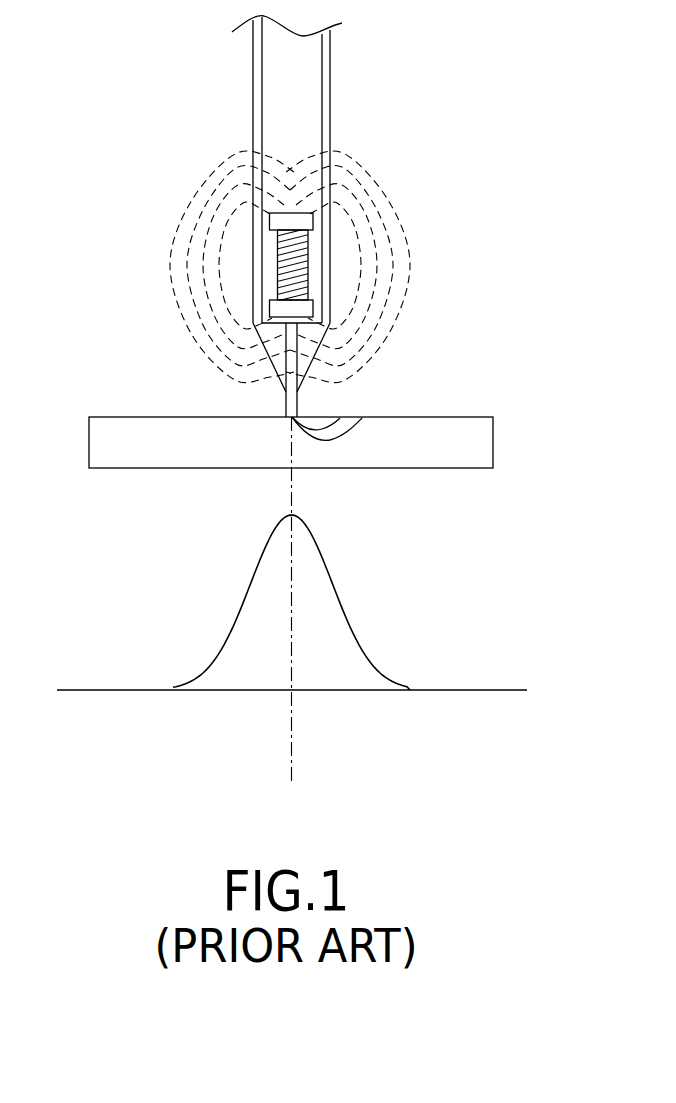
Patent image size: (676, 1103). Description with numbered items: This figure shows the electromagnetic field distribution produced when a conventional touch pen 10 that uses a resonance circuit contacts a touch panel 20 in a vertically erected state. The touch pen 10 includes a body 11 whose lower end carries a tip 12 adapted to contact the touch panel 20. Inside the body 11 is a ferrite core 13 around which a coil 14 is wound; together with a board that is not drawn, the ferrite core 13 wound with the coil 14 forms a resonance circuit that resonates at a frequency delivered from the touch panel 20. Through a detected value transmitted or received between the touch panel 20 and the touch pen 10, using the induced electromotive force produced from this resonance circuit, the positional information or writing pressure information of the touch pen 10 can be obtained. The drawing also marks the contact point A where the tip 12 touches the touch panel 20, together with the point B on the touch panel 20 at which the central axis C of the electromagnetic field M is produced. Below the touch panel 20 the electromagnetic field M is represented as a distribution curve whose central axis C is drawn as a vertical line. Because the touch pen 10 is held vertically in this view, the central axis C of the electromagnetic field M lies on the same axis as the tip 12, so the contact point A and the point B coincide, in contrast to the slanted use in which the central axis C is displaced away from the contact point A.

The touch pen 10 is at (92, 91).
The body 11 is at (330, 70).
The tip 12 is at (285, 402).
The ferrite core 13 is at (270, 222).
The coil 14 is at (303, 250).
The touch panel 20 is at (477, 444).
The contact point A is at (340, 418).
The point B is at (362, 418).
The central axis C is at (292, 515).
The electromagnetic field M is at (341, 605).